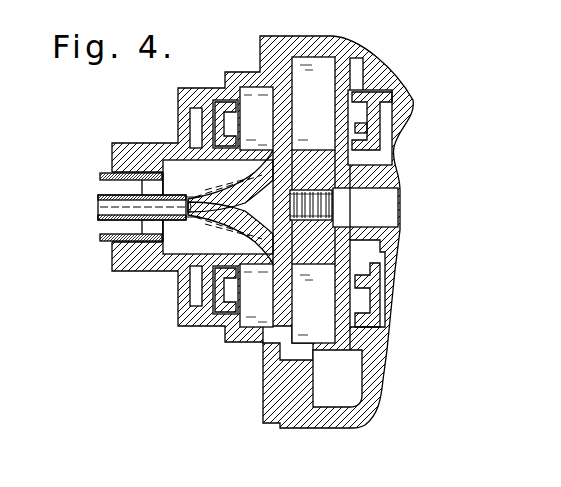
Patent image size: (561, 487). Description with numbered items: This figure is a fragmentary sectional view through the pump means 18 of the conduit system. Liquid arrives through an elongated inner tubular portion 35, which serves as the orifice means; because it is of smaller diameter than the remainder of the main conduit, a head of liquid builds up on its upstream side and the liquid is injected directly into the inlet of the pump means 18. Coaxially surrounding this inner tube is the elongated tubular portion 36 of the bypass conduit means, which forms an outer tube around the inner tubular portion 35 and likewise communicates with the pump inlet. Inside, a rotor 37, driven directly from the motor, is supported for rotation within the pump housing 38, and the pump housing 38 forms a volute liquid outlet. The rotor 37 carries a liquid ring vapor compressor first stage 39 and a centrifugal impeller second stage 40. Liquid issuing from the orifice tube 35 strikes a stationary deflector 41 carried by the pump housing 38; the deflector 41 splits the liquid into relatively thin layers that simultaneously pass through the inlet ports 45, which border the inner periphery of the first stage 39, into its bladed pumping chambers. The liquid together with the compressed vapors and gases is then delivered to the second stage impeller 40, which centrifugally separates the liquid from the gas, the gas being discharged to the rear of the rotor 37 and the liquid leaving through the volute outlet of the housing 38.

The pump means 18 is at (172, 282).
The elongated inner tubular portion 35 is at (100, 200).
The elongated tubular portion 36 is at (103, 241).
The rotor 37 is at (347, 348).
The pump housing 38 is at (322, 428).
The liquid ring vapor compressor first stage 39 is at (266, 128).
The centrifugal impeller second stage 40 is at (319, 135).
The stationary deflector 41 is at (212, 219).
The inlet ports 45 is at (262, 150).